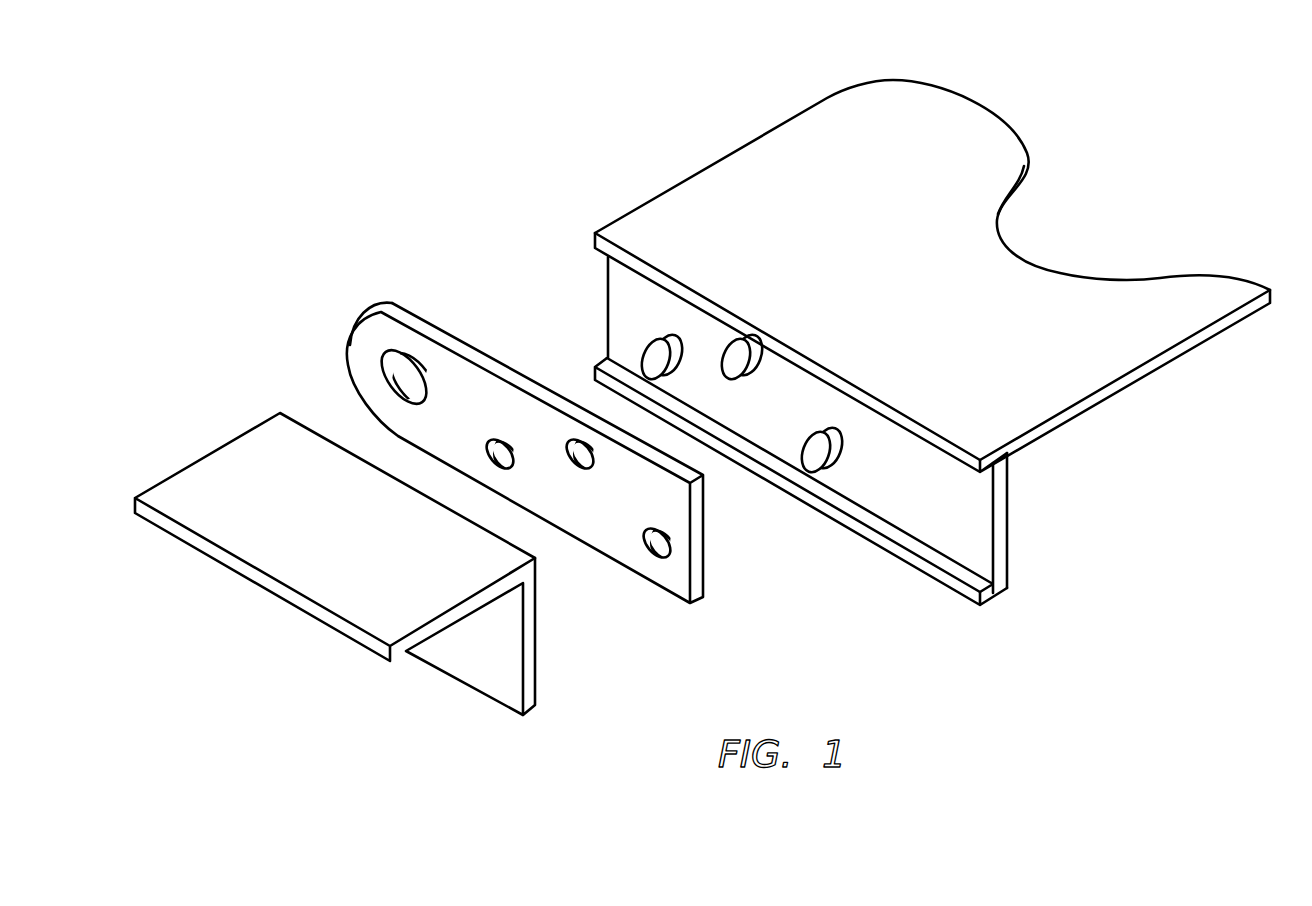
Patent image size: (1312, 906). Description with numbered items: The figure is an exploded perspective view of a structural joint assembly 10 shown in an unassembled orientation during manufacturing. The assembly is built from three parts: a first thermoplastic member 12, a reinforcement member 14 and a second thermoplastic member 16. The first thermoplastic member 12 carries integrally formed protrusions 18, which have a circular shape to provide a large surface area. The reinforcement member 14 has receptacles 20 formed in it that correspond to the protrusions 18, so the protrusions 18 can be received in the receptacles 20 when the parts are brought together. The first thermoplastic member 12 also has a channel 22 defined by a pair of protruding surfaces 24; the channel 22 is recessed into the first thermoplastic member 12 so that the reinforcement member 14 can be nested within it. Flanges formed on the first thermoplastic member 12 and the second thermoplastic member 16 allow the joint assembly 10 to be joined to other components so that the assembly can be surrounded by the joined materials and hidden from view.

The structural joint assembly 10 is at (428, 210).
The first thermoplastic member 12 is at (1047, 385).
The reinforcement member 14 is at (677, 522).
The second thermoplastic member 16 is at (493, 655).
The protrusions 18 is at (815, 462).
The receptacles 20 is at (655, 548).
The channel 22 is at (973, 512).
The protruding surfaces 24 is at (593, 242).